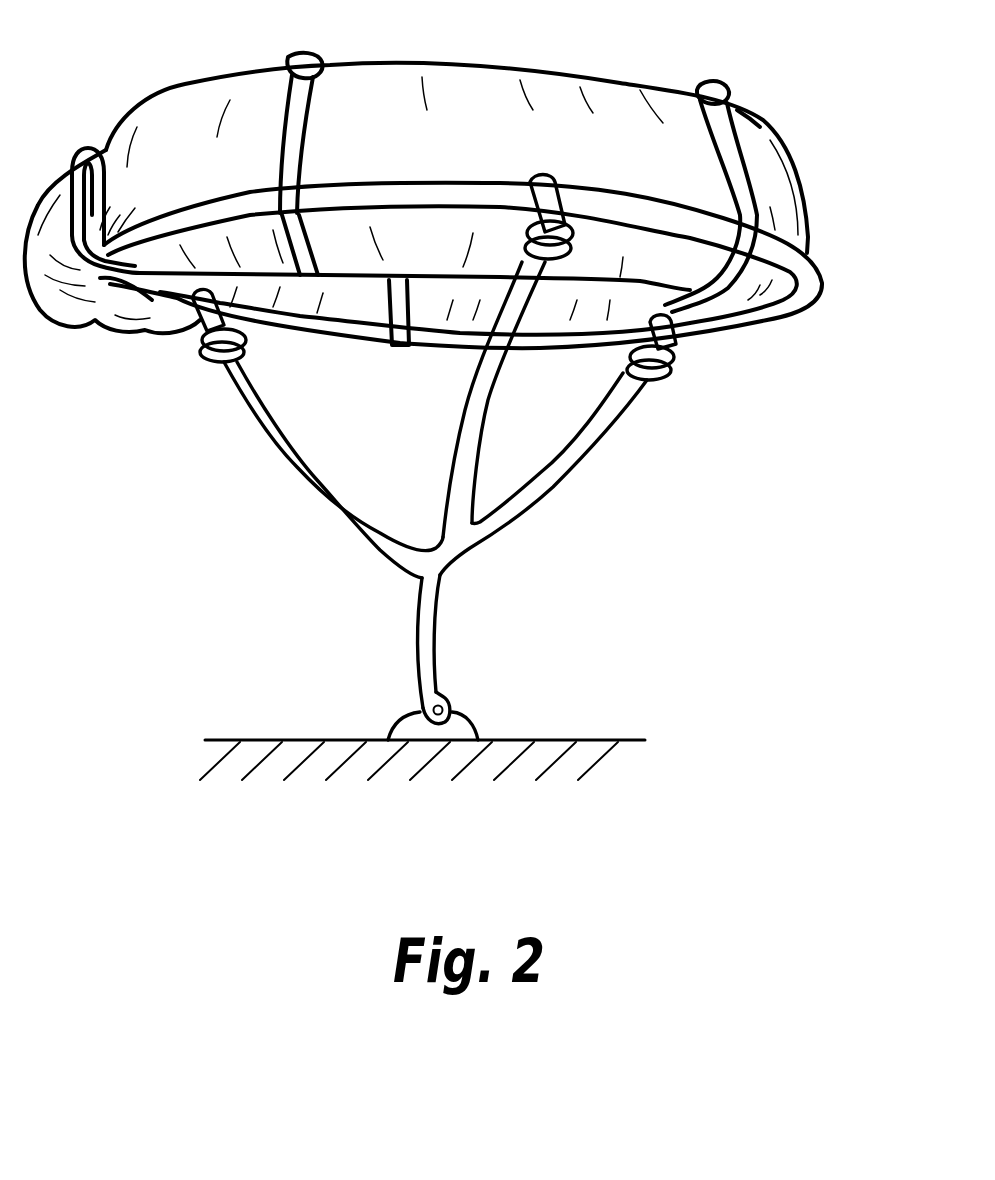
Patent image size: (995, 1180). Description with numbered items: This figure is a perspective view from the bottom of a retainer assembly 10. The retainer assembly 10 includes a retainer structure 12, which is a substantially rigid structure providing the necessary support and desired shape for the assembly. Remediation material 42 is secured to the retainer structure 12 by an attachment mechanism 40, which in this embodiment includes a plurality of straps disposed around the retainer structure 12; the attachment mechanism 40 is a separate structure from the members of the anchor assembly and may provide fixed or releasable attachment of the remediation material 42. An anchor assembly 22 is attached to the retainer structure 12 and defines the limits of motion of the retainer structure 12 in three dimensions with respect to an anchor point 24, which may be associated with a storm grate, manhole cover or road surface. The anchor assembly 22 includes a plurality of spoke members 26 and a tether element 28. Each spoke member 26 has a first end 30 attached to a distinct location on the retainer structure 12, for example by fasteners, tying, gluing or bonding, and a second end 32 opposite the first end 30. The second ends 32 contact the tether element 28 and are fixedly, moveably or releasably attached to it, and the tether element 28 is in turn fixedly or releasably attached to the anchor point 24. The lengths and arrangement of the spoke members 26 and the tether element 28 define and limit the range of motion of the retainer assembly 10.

The retainer assembly 10 is at (471, 393).
The retainer structure 12 is at (793, 264).
The anchor assembly 22 is at (442, 644).
The anchor point 24 is at (463, 713).
The spoke member 26 is at (287, 462).
The tether element 28 is at (423, 638).
The first end 30 is at (200, 347).
The second end 32 is at (447, 527).
The attachment mechanism 40 is at (300, 63).
The remediation material 42 is at (187, 118).